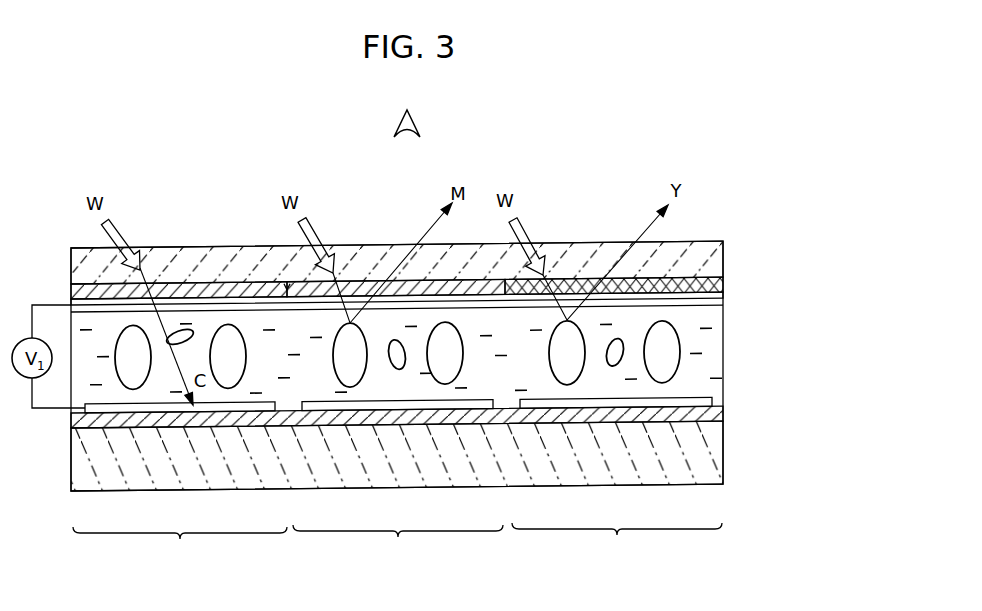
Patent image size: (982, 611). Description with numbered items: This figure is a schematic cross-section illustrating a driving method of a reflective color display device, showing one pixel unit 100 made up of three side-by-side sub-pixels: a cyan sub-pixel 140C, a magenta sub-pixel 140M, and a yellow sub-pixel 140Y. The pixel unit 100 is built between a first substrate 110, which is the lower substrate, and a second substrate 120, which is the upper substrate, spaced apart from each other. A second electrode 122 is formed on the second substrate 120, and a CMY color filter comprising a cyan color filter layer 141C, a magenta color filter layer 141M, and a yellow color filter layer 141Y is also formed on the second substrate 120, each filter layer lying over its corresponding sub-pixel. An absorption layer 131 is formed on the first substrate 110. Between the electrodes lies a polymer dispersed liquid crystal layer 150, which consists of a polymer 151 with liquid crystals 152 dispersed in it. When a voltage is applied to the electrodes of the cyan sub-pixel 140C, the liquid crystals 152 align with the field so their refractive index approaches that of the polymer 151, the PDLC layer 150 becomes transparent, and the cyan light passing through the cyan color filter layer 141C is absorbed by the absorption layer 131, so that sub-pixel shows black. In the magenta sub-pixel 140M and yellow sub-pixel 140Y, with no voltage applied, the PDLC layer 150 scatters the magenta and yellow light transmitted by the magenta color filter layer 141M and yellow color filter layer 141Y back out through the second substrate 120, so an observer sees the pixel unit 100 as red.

The pixel unit 100 is at (740, 232).
The first substrate 110 is at (723, 453).
The second substrate 120 is at (723, 262).
The second electrode 122 is at (723, 299).
The absorption layer 131 is at (723, 416).
The cyan color filter layer 141C is at (184, 288).
The magenta color filter layer 141M is at (363, 288).
The yellow color filter layer 141Y is at (580, 285).
The polymer dispersed liquid crystal layer 150 is at (466, 352).
The polymer 151 is at (723, 337).
The liquid crystals 152 is at (680, 365).
The cyan sub-pixel 140C is at (180, 549).
The magenta sub-pixel 140M is at (398, 546).
The yellow sub-pixel 140Y is at (617, 544).